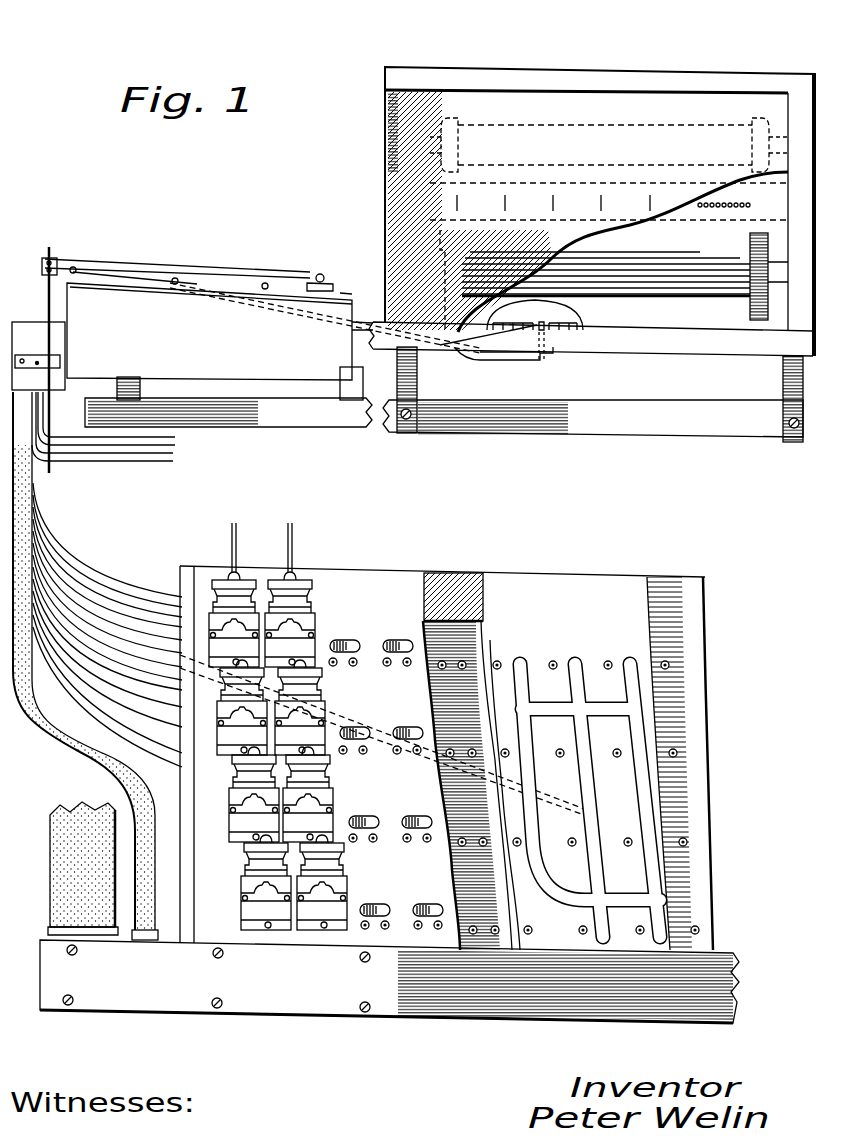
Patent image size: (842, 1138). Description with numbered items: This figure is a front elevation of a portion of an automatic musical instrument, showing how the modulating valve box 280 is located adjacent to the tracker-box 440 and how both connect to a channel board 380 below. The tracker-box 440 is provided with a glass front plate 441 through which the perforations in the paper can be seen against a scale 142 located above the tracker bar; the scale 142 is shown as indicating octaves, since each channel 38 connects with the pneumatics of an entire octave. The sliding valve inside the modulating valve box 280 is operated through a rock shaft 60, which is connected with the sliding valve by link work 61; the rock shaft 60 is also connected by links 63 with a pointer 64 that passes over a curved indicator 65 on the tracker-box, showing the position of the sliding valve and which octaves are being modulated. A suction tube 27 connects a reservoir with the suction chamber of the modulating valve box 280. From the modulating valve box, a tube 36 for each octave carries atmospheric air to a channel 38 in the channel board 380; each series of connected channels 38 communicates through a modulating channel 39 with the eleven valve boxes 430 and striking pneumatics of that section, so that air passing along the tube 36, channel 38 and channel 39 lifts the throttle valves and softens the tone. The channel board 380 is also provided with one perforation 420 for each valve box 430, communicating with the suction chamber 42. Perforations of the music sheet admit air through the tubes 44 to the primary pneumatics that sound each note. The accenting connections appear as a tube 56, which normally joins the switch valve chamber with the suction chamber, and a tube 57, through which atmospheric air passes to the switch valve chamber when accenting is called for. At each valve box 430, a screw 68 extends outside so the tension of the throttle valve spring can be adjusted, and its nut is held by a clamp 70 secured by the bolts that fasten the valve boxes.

The tracker-box 440 is at (480, 63).
The glass front plate 441 is at (620, 110).
The octave indicating scale 142 is at (443, 203).
The curved indicator 65 is at (583, 322).
The pointer 64 is at (545, 324).
The links 63 is at (465, 352).
The link work 61 is at (196, 262).
The rock shaft 60 is at (58, 262).
The modulating valve box 280 is at (305, 365).
The tube 57 is at (177, 443).
The tube 56 is at (110, 462).
The tube 36 is at (125, 722).
The suction tube 27 is at (62, 747).
The channel board 380 is at (553, 575).
The suction chamber 42 is at (436, 632).
The channel 38 is at (634, 760).
The tube 44 is at (553, 661).
The modulating channel 39 is at (355, 666).
The perforation 420 is at (400, 640).
The valve box 430 is at (305, 628).
The clamp 70 is at (307, 727).
The screw 68 is at (248, 808).